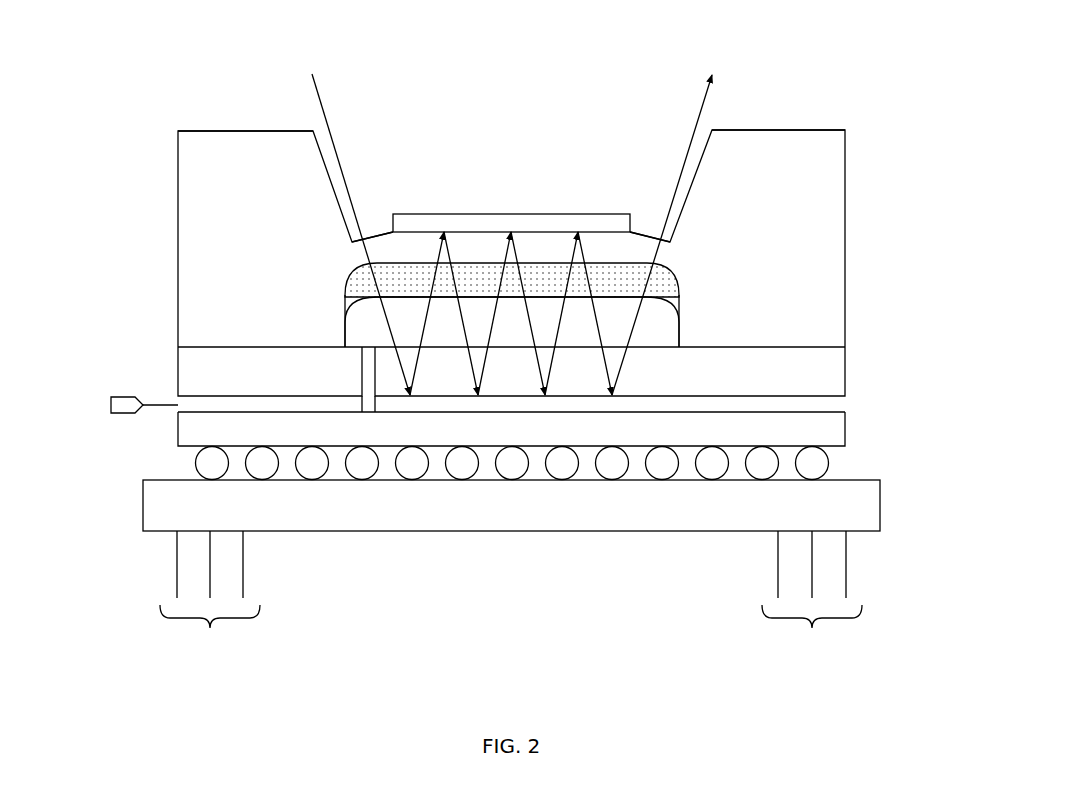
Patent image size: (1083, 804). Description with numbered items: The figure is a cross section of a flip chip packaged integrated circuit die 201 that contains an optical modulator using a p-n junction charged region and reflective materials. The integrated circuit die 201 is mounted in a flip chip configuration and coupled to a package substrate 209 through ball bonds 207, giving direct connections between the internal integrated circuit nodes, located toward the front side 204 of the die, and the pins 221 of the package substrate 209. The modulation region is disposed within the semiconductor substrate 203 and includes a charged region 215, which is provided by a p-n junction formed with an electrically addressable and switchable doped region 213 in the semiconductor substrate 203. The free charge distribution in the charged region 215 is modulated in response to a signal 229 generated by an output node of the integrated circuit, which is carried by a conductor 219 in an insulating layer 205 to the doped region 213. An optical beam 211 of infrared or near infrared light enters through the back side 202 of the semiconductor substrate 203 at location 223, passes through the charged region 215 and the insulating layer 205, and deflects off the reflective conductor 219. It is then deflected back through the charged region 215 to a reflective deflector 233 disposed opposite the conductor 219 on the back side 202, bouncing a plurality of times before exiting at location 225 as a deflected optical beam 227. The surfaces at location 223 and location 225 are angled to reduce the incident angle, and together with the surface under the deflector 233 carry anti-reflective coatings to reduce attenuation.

The integrated circuit die 201 is at (882, 68).
The back side 202 is at (780, 130).
The semiconductor substrate 203 is at (845, 195).
The front side 204 is at (837, 447).
The insulating layer 205 is at (845, 373).
The ball bonds 207 is at (562, 472).
The package substrate 209 is at (880, 508).
The optical beam 211 is at (334, 140).
The doped region 213 is at (682, 337).
The charged region 215 is at (681, 293).
The conductor 219 is at (845, 408).
The pins 221 is at (511, 591).
The location 223 is at (368, 234).
The location 225 is at (656, 234).
The deflected optical beam 227 is at (690, 138).
The signal 229 is at (80, 399).
The deflector 233 is at (516, 211).